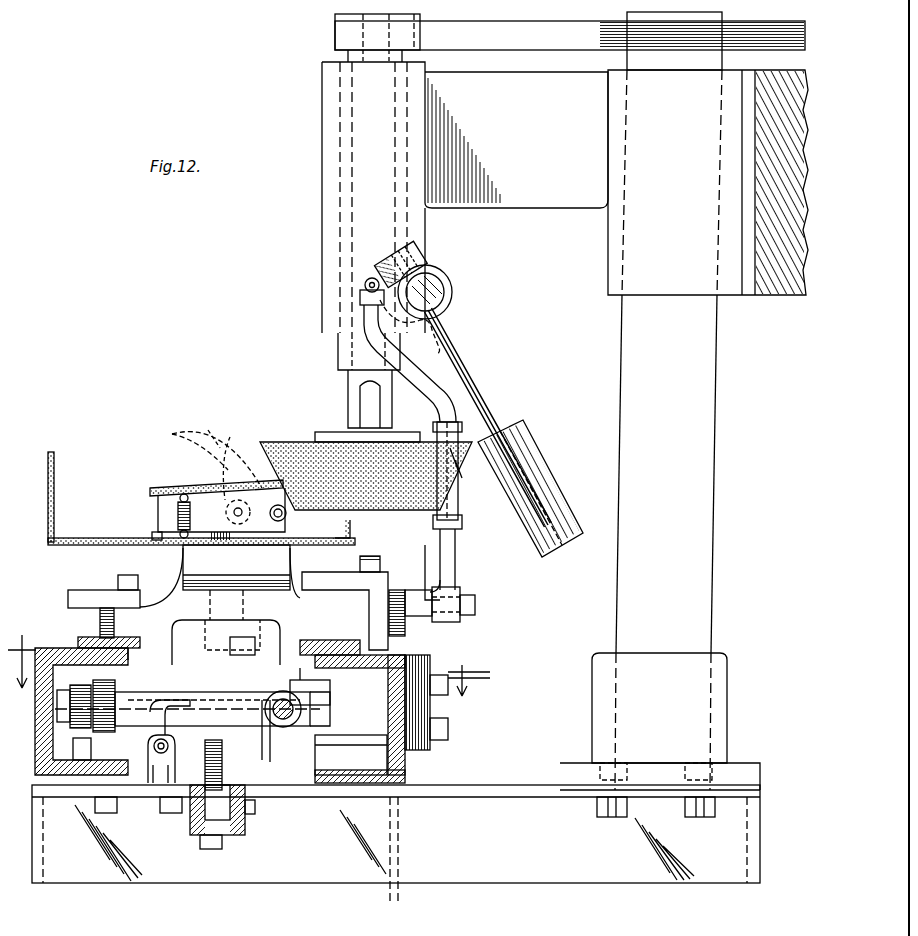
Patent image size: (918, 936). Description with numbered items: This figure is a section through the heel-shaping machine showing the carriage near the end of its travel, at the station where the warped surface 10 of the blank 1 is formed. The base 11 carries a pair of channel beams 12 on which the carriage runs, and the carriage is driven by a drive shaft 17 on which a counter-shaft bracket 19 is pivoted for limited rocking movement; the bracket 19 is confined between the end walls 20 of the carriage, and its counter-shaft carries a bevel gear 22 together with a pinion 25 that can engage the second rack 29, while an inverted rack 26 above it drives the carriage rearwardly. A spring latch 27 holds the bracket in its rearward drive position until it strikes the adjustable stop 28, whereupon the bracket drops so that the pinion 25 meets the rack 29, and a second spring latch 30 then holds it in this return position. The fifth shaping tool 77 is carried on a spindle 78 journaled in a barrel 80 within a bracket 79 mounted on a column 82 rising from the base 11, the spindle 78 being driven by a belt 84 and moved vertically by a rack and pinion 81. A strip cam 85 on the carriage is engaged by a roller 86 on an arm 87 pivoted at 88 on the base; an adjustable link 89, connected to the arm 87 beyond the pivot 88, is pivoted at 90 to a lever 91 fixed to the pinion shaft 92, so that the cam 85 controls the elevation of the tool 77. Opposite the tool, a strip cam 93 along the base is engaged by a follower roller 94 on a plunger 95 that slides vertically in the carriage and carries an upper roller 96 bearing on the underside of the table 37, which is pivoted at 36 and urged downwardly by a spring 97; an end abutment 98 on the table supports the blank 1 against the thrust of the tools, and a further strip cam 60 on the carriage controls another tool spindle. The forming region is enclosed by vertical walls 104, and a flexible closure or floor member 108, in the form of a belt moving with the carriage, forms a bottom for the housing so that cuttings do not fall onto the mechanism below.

The blank 1 is at (168, 492).
The warped surface 10 is at (249, 656).
The base 11 is at (745, 805).
The beams 12 is at (40, 710).
The drive shaft 17 is at (192, 566).
The counter-shaft bracket 19 is at (300, 712).
The end walls 20 is at (322, 688).
The bevel gear 22 is at (268, 750).
The pinion 25 is at (88, 692).
The inverted rack 26 is at (118, 726).
The spring latch 27 is at (105, 732).
The adjustable stop 28 is at (152, 760).
The second rack 29 is at (75, 740).
The second spring latch 30 is at (190, 705).
The pivots 36 is at (286, 514).
The table 37 is at (232, 462).
The cam 60 is at (85, 592).
The fifth shaping tool 77 is at (310, 456).
The spindle 78 is at (356, 386).
The bracket 79 is at (548, 192).
The barrel 80 is at (340, 351).
The rack and pinion 81 is at (404, 330).
The column 82 is at (710, 392).
The belt 84 is at (540, 40).
The strip cam 85 is at (400, 648).
The roller 86 is at (398, 590).
The arm 87 is at (442, 592).
The pivot 88 is at (426, 592).
The adjustable link 89 is at (452, 482).
The pivot 90 is at (365, 285).
The lever 91 is at (396, 268).
The pinion shaft 92 is at (435, 294).
The strip cam 93 is at (212, 808).
The follower roller 94 is at (206, 752).
The plunger 95 is at (222, 652).
The roller 96 is at (228, 513).
The spring 97 is at (176, 514).
The end abutment 98 is at (192, 490).
The vertical walls 104 is at (54, 478).
The flexible closure or floor member 108 is at (110, 540).